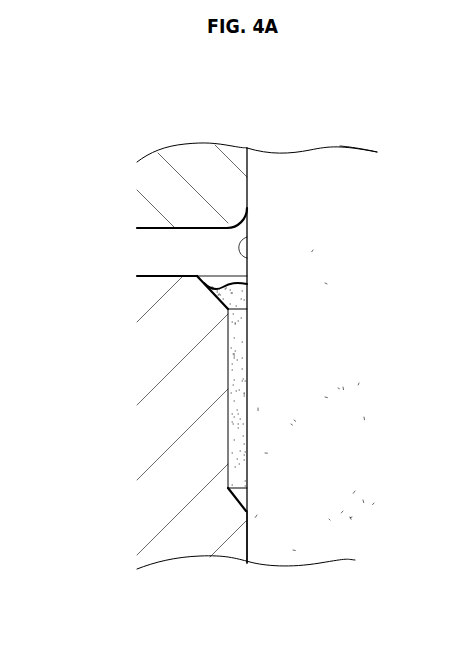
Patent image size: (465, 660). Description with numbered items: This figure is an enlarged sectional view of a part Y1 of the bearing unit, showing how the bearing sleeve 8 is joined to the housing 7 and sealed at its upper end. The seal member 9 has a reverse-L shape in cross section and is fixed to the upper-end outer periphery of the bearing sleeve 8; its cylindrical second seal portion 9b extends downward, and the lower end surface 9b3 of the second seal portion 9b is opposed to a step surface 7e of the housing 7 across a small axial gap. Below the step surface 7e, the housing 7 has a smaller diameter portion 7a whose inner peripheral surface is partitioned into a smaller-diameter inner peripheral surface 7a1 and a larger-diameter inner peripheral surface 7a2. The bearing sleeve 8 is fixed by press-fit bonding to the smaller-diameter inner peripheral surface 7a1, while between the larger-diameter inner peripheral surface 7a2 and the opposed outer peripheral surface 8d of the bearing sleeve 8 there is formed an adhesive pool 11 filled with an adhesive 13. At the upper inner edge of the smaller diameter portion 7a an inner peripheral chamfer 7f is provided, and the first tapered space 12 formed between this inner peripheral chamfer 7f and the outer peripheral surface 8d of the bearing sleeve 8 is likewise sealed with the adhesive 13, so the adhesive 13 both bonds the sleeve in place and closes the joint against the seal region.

The seal member 9 is at (149, 189).
The second seal portion 9b is at (192, 186).
The lower end surface of the second seal portion 9b3 is at (180, 230).
The bearing sleeve 8 is at (329, 316).
The outer peripheral surface of the bearing sleeve 8d is at (247, 258).
The part Y1 is at (373, 128).
The housing 7 is at (203, 430).
The smaller diameter portion 7a is at (177, 430).
The step surface 7e is at (172, 278).
The inner peripheral chamfer 7f is at (202, 268).
The larger-diameter inner peripheral surface 7a2 is at (232, 446).
The smaller-diameter inner peripheral surface 7a1 is at (248, 540).
The first tapered space 12 is at (224, 307).
The adhesive pool 11 is at (225, 359).
The adhesive 13 is at (232, 466).